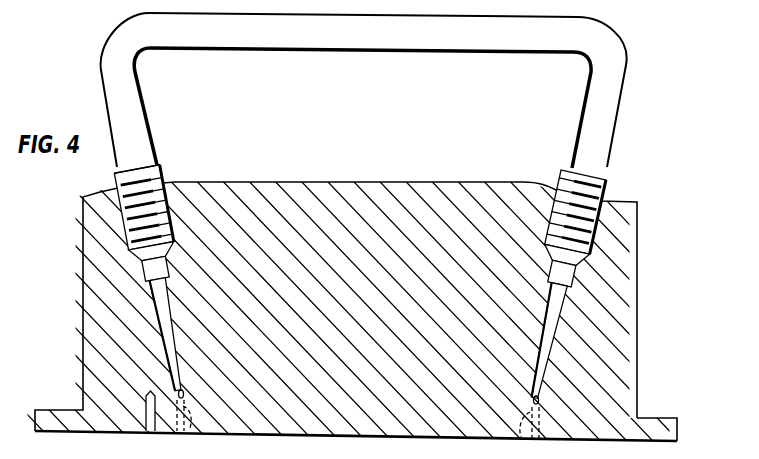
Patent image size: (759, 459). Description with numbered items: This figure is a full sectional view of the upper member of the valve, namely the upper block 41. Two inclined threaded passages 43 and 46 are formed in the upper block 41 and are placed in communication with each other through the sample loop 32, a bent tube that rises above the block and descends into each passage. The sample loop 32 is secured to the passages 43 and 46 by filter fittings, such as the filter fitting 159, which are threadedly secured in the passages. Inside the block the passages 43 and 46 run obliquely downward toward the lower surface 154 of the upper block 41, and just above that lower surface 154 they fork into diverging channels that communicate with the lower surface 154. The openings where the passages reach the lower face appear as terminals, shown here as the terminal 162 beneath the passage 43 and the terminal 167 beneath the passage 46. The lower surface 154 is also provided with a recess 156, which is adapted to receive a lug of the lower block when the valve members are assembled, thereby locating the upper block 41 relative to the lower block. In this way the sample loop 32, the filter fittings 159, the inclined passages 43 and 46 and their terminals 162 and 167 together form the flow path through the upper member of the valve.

The sample loop 32 is at (350, 42).
The upper block 41 is at (92, 193).
The inclined threaded passage 43 is at (172, 193).
The inclined threaded passage 46 is at (554, 184).
The lower surface 154 is at (652, 422).
The recess 156 is at (145, 424).
The filter fitting 159 is at (164, 175).
The terminal 162 is at (188, 432).
The terminal 167 is at (521, 438).